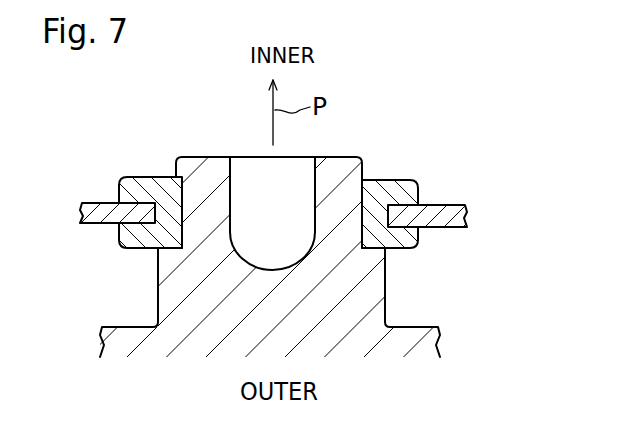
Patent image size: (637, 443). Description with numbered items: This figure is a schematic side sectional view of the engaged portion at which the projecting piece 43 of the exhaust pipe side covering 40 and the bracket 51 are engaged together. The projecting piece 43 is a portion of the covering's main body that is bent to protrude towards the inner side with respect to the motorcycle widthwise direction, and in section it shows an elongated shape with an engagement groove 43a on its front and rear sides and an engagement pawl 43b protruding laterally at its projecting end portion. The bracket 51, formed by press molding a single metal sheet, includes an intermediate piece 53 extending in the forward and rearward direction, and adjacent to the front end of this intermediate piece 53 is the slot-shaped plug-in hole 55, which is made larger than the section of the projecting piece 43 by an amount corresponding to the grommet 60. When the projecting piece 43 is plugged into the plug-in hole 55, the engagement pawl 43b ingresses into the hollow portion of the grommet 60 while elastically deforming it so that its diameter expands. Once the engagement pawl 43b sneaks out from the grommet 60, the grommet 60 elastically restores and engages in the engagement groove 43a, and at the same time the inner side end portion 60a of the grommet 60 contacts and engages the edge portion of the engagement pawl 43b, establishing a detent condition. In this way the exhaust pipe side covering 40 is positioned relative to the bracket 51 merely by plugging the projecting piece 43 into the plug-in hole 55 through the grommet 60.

The exhaust pipe side covering 40 is at (318, 224).
The projecting piece 43 is at (214, 157).
The engagement groove 43a is at (152, 247).
The engagement pawl 43b is at (174, 173).
The bracket 51 is at (296, 230).
The intermediate piece 53 is at (445, 205).
The plug-in hole 55 is at (387, 270).
The grommet 60 is at (130, 177).
The inner side end portion 60a is at (365, 158).